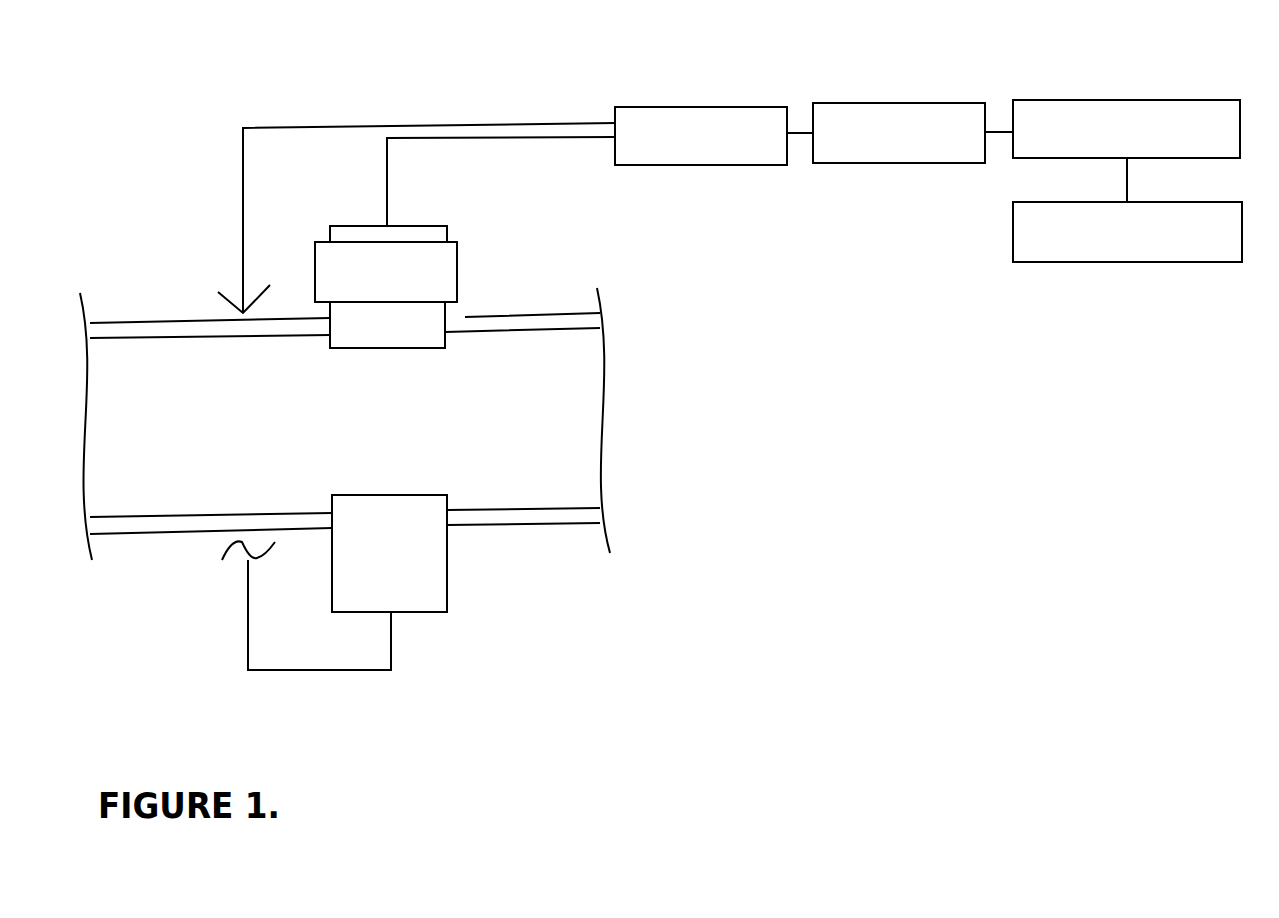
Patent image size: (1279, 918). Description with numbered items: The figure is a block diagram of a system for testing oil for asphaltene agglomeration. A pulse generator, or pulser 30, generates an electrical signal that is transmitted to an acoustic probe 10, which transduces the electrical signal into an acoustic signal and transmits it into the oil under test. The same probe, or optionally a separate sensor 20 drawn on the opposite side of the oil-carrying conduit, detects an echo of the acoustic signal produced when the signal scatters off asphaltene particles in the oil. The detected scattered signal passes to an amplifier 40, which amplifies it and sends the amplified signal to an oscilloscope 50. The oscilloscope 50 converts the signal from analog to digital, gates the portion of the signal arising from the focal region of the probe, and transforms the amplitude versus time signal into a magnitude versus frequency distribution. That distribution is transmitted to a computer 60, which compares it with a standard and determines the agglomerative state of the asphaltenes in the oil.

The acoustic probe 10 is at (457, 270).
The separate sensor 20 is at (447, 577).
The pulser 30 is at (712, 107).
The amplifier 40 is at (917, 103).
The oscilloscope 50 is at (1163, 100).
The computer 60 is at (1175, 262).